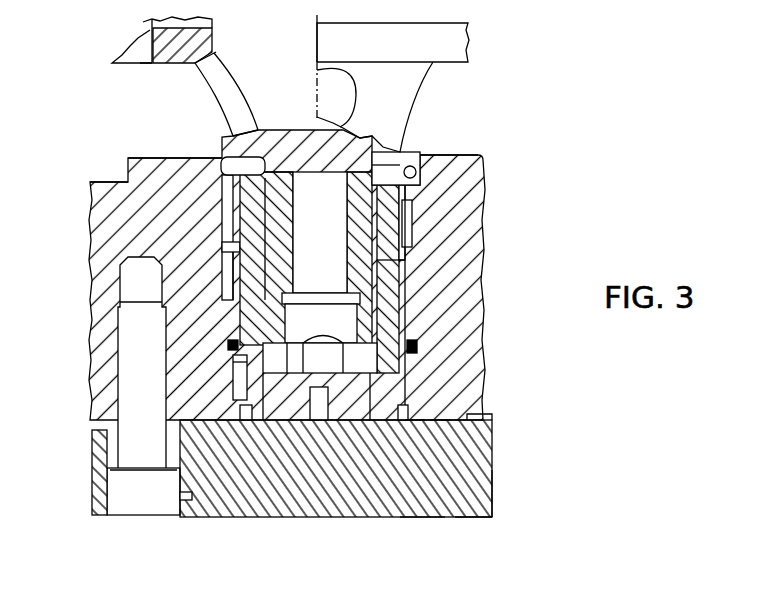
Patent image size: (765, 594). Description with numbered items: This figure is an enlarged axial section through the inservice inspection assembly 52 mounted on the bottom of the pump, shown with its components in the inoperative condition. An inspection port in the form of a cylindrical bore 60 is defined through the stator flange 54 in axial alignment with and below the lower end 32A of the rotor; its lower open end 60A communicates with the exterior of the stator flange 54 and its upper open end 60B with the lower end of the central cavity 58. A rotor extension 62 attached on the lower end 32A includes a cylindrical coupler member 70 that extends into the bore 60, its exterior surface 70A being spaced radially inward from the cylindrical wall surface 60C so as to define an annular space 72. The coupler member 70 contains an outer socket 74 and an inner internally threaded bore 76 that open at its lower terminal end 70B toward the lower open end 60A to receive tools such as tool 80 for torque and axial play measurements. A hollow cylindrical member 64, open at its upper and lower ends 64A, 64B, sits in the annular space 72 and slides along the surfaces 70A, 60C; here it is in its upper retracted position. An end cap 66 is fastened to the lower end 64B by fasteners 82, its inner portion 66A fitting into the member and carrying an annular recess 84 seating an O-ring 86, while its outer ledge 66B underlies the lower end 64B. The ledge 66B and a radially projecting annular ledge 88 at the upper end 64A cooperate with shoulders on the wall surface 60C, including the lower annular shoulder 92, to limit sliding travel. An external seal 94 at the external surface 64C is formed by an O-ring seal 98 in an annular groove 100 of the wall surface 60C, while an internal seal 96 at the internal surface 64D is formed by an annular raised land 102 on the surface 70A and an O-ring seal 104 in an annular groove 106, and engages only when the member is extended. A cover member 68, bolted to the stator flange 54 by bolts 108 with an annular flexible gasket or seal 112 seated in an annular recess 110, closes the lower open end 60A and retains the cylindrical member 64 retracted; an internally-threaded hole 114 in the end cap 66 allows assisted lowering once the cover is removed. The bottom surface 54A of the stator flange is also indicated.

The lower end of the rotor 32A is at (132, 55).
The inservice inspection assembly 52 is at (482, 118).
The stator flange 54 is at (474, 246).
The body bottom surface 54A is at (220, 420).
The central cavity 58 is at (196, 131).
The cylindrical bore 60 is at (405, 152).
The lower open end of the bore 60A is at (470, 418).
The upper open end of the bore 60B is at (402, 157).
The cylindrical wall surface of the bore 60C is at (413, 320).
The rotor extension 62 is at (200, 62).
The hollow cylindrical member 64 is at (403, 328).
The upper end of the cylindrical member 64A is at (272, 195).
The lower end of the cylindrical member 64B is at (410, 477).
The external surface of the cylindrical member 64C is at (252, 340).
The internal surface of the cylindrical member 64D is at (240, 270).
The end cap 66 is at (408, 440).
The inner portion of the end cap 66A is at (405, 382).
The outer ledge of the end cap 66B is at (430, 490).
The cover member 68 is at (473, 517).
The cylindrical coupler member 70 is at (403, 363).
The exterior surface of the coupler member 70A is at (403, 262).
The lower terminal end of the coupler member 70B is at (288, 420).
The annular space 72 is at (225, 163).
The outer socket 74 is at (378, 420).
The inner internally threaded bore 76 is at (345, 130).
The tool 80 is at (428, 210).
The fasteners 82 is at (243, 405).
The annular recess 84 is at (467, 504).
The O-ring 86 is at (407, 420).
The radially projecting annular ledge 88 is at (420, 183).
The lower annular shoulder 92 is at (440, 450).
The external seal 94 is at (226, 344).
The internal seal 96 is at (222, 218).
The O-ring seal 98 is at (232, 353).
The annular groove 100 is at (125, 400).
The annular raised land 102 is at (297, 217).
The O-ring seal 104 is at (225, 172).
The annular groove 106 is at (245, 220).
The bolts 108 is at (141, 500).
The annular recess 110 is at (205, 425).
The annular flexible gasket or seal 112 is at (97, 452).
The internally-threaded hole 114 is at (348, 375).